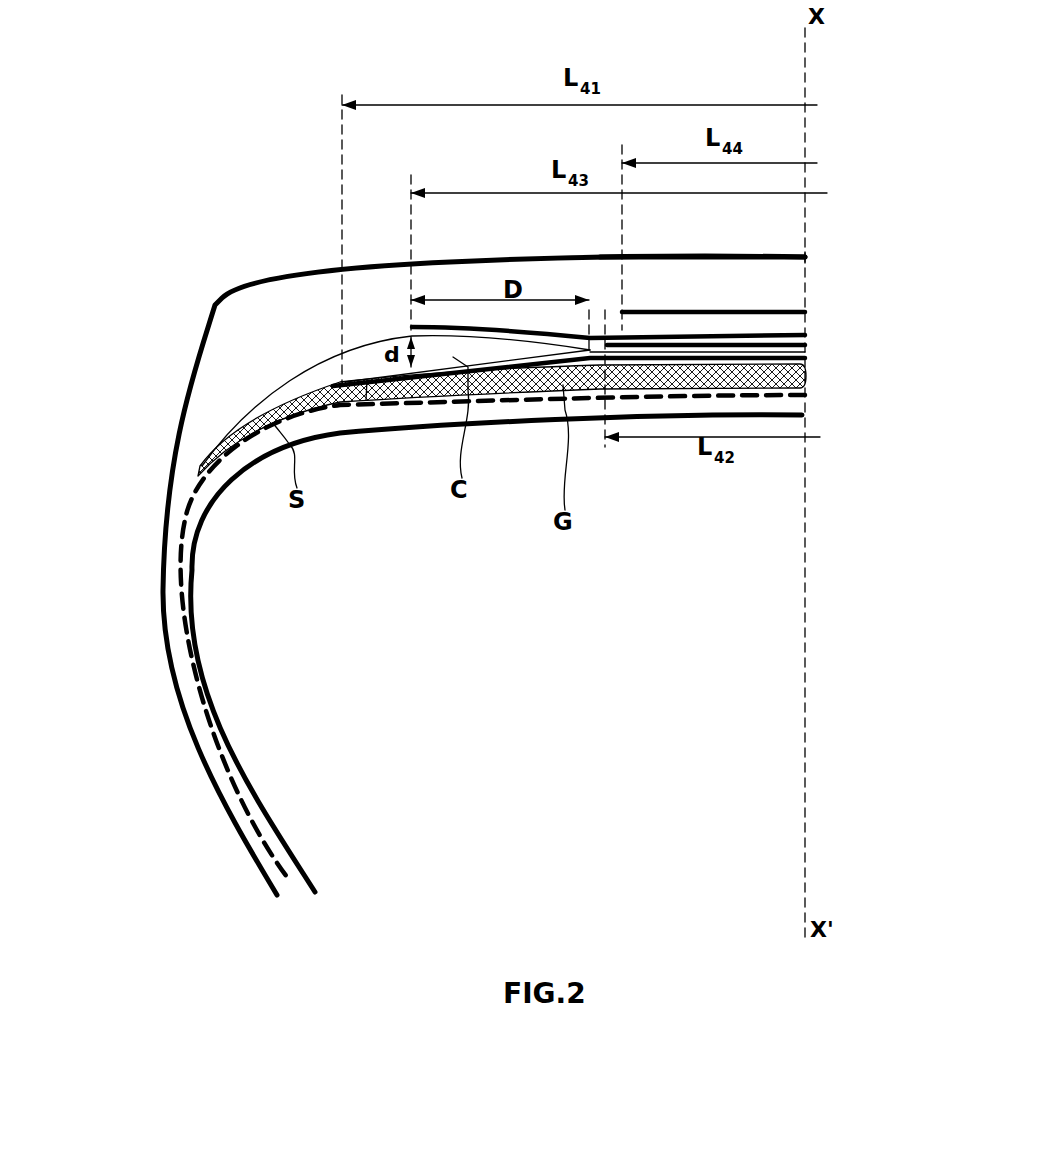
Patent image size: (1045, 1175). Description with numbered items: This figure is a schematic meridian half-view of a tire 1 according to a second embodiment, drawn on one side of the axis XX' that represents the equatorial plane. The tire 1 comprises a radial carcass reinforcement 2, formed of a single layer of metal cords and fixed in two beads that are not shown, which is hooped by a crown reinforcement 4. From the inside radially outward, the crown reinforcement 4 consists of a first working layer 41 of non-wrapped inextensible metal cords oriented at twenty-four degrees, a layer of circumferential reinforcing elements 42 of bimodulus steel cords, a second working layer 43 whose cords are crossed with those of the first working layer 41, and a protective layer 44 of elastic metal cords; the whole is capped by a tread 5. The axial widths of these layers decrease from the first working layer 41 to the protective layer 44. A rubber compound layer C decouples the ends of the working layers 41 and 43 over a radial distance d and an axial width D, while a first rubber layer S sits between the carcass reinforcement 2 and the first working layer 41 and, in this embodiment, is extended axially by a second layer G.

The tire 1 is at (128, 262).
The radial carcass reinforcement 2 is at (190, 522).
The crown reinforcement 4 is at (832, 345).
The first working layer 41 is at (740, 366).
The layer of circumferential reinforcing elements 42 is at (762, 347).
The second working layer 43 is at (577, 342).
The protective layer 44 is at (628, 312).
The tread 5 is at (712, 272).